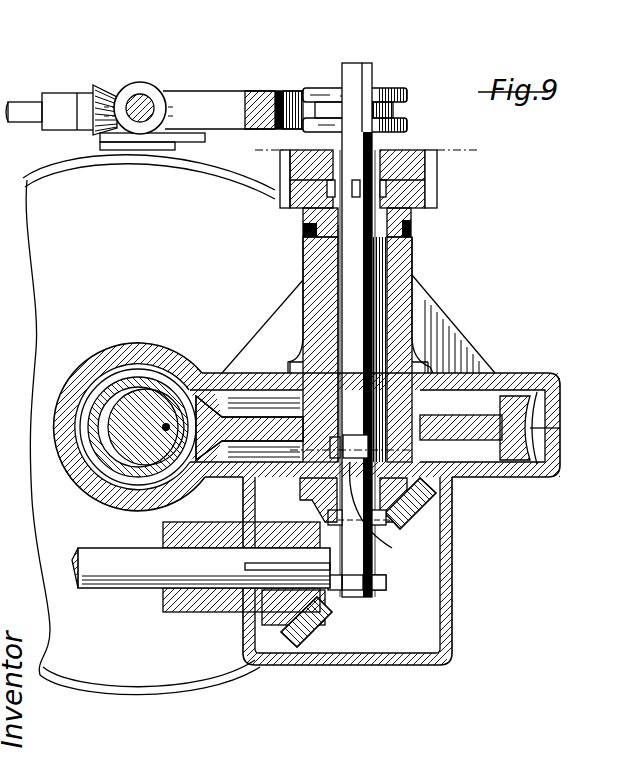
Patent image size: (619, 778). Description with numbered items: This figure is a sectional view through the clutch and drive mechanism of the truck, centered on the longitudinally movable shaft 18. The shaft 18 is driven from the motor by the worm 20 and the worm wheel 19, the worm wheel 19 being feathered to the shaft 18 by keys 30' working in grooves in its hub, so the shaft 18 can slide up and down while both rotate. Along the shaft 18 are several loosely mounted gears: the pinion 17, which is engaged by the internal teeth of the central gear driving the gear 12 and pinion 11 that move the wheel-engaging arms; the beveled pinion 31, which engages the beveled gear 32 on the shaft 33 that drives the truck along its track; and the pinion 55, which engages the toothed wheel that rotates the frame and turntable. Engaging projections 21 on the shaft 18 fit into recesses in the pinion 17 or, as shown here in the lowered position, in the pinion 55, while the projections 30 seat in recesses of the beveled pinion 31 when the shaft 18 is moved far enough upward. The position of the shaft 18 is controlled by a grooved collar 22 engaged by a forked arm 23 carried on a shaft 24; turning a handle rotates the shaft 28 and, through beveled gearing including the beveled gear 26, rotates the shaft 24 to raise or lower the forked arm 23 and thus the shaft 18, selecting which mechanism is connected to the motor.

The pinion 11 is at (257, 160).
The gear 12 is at (275, 443).
The pinion 17 is at (430, 167).
The shaft 18 is at (362, 272).
The worm wheel 19 is at (522, 372).
The worm 20 is at (138, 382).
The engaging projection 21 is at (383, 180).
The grooved collar 22 is at (383, 92).
The forked arm 23 is at (222, 105).
The shaft 24 is at (141, 102).
The beveled gear 26 is at (168, 142).
The shaft 28 is at (26, 104).
The projection 30 is at (379, 594).
The key 30' is at (358, 514).
The beveled pinion 31 is at (420, 496).
The beveled gear 32 is at (312, 617).
The shaft 33 is at (143, 580).
The pinion 55 is at (412, 208).